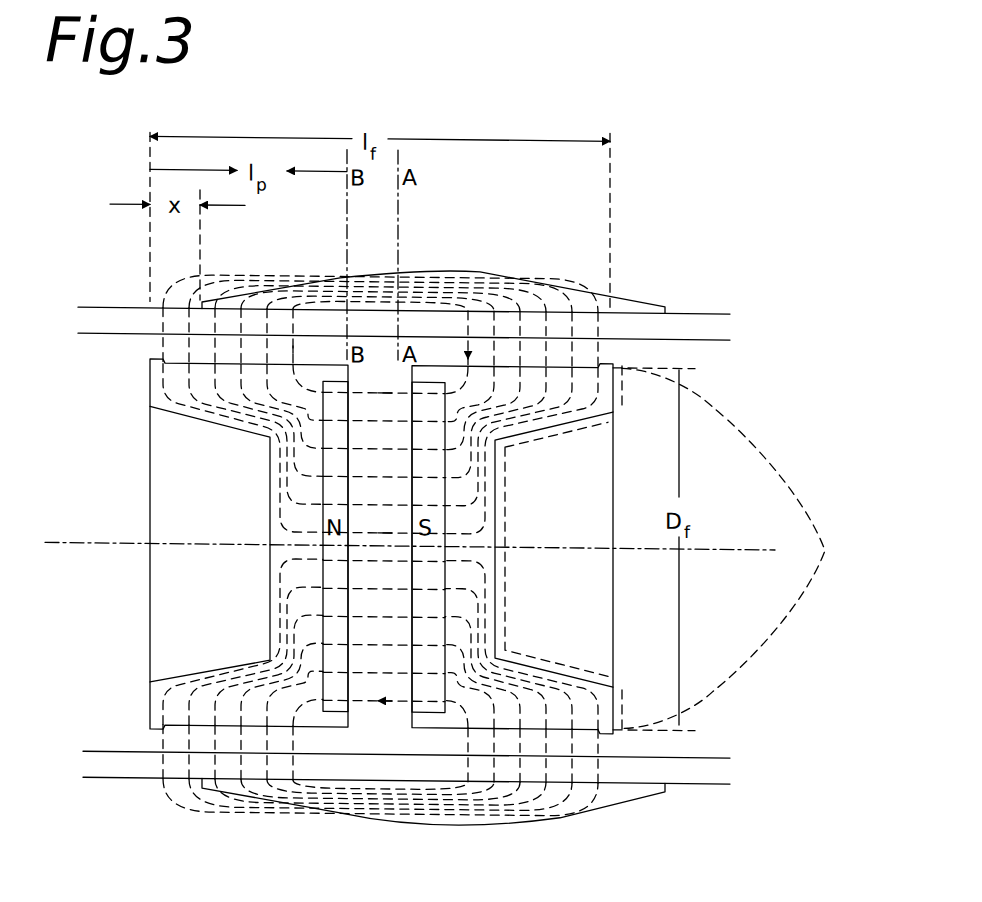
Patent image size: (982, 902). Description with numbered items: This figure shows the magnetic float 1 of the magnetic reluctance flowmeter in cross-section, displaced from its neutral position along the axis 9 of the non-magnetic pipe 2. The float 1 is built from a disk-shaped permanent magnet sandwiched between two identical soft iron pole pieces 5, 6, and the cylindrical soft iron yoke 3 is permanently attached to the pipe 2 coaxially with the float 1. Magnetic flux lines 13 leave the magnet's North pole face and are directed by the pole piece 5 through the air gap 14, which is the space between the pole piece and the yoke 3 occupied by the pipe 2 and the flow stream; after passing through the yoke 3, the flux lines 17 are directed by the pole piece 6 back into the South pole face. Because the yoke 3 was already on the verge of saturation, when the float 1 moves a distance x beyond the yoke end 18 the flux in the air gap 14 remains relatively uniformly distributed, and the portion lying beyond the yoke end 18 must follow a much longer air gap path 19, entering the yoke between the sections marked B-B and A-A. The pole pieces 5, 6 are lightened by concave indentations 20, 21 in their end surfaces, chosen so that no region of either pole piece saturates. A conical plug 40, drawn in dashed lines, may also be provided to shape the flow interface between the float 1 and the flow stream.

The magnetic float 1 is at (618, 706).
The non-magnetic pipe 2 is at (388, 778).
The cylindrical soft iron yoke 3 is at (538, 812).
The soft iron pole piece 5 is at (286, 589).
The soft iron pole piece 6 is at (492, 588).
The axis 9 is at (68, 541).
The magnetic flux lines 13 is at (215, 406).
The air gap 14 is at (160, 352).
The magnetic flux lines 17 is at (530, 417).
The yoke end 18 is at (180, 299).
The air gap path 19 is at (300, 283).
The concave indentation 20 is at (195, 668).
The concave indentation 21 is at (565, 424).
The conical plug 40 is at (785, 452).